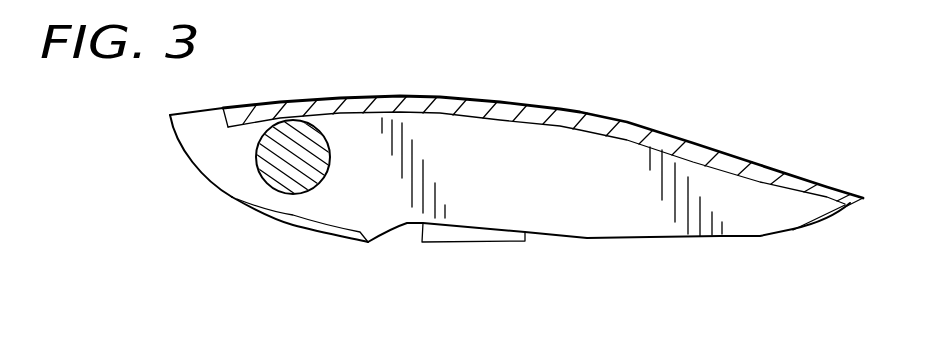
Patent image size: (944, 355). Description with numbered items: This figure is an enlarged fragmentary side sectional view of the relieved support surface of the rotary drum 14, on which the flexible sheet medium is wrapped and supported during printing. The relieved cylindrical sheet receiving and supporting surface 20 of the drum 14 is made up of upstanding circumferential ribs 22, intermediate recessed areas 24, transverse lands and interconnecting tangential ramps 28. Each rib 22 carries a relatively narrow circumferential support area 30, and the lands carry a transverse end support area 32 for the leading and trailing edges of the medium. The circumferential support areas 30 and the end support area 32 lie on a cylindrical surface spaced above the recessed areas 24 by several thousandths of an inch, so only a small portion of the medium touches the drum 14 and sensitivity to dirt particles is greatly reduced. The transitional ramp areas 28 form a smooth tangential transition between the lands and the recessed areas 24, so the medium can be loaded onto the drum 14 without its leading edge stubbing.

The rotary drum 14 is at (622, 220).
The relieved cylindrical sheet receiving and supporting surface 20 is at (262, 102).
The circumferential rib 22 is at (858, 197).
The recessed area 24 is at (846, 206).
The tangential ramp 28 is at (593, 125).
The circumferential support area 30 is at (653, 126).
The transverse end support area 32 is at (258, 152).